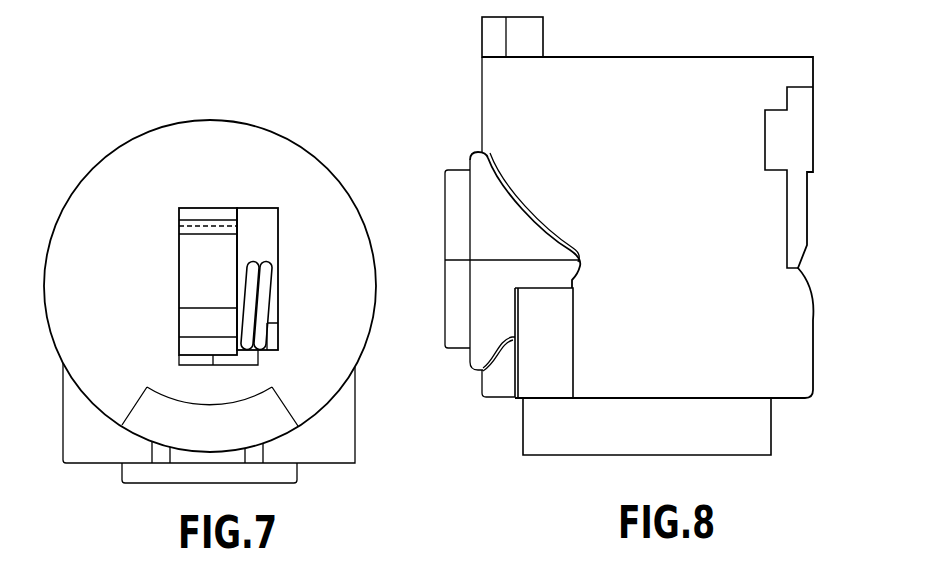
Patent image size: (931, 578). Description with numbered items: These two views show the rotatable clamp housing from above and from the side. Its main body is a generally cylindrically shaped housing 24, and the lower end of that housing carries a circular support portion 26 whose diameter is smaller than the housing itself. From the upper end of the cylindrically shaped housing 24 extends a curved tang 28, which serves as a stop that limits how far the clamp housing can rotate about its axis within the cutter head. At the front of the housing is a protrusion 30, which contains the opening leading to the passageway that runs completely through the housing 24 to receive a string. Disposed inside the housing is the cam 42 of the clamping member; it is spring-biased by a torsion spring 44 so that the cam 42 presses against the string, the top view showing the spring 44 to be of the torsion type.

In FIG. 8, the cylindrically shaped housing 24 is at (718, 58).
In FIG. 8, the circular support portion 26 is at (771, 432).
In FIG. 7, the curved tang 28 is at (277, 412).
In FIG. 8, the curved tang 28 is at (537, 27).
In FIG. 8, the protrusion 30 is at (480, 152).
In FIG. 7, the cam 42 is at (213, 243).
In FIG. 7, the torsion spring 44 is at (258, 292).